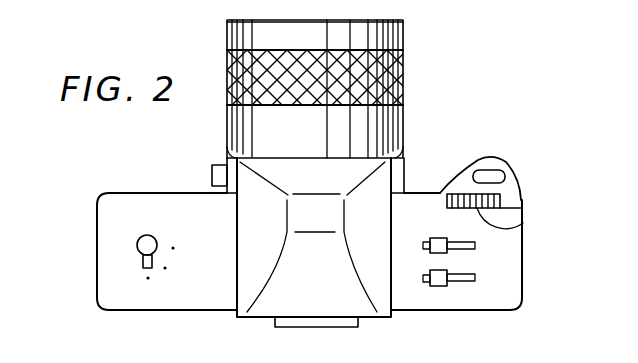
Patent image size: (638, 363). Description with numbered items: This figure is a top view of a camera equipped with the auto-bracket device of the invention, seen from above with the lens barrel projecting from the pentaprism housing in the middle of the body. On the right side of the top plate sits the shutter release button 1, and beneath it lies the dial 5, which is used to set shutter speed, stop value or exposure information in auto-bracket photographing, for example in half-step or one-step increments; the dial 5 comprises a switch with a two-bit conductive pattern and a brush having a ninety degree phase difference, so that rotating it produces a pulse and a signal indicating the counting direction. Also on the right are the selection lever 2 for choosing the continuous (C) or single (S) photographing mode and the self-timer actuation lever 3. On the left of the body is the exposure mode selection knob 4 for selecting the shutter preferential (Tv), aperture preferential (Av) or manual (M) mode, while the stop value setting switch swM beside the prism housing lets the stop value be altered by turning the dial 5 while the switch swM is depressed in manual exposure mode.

The shutter release button 1 is at (497, 177).
The selection lever 2 is at (428, 240).
The self-timer actuation lever 3 is at (440, 287).
The exposure mode selection knob 4 is at (137, 248).
The dial 5 is at (523, 224).
The stop value setting switch swM is at (212, 172).